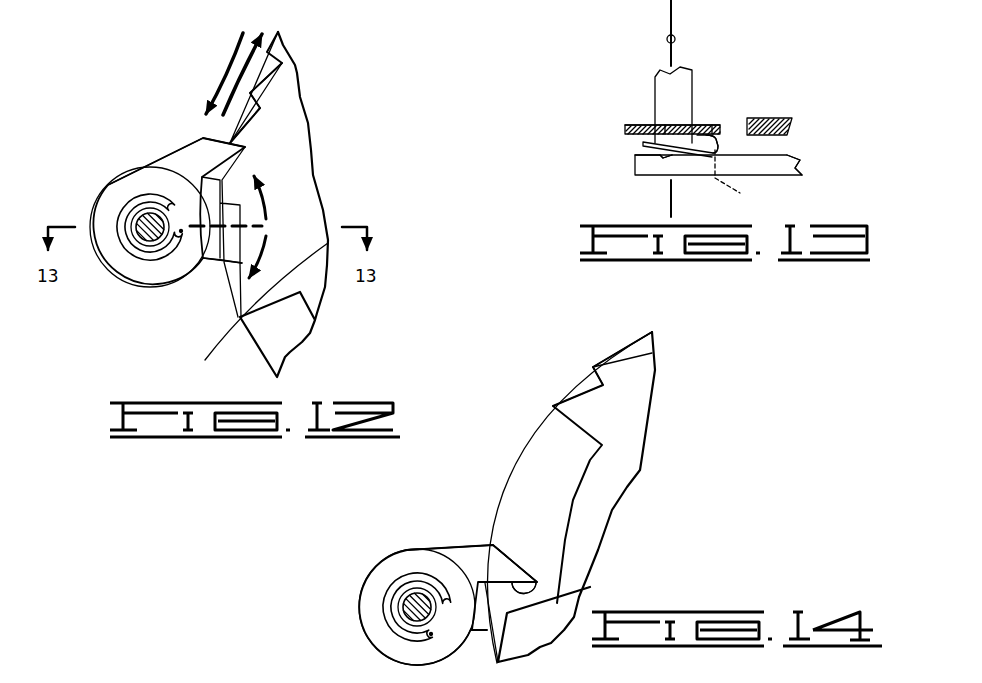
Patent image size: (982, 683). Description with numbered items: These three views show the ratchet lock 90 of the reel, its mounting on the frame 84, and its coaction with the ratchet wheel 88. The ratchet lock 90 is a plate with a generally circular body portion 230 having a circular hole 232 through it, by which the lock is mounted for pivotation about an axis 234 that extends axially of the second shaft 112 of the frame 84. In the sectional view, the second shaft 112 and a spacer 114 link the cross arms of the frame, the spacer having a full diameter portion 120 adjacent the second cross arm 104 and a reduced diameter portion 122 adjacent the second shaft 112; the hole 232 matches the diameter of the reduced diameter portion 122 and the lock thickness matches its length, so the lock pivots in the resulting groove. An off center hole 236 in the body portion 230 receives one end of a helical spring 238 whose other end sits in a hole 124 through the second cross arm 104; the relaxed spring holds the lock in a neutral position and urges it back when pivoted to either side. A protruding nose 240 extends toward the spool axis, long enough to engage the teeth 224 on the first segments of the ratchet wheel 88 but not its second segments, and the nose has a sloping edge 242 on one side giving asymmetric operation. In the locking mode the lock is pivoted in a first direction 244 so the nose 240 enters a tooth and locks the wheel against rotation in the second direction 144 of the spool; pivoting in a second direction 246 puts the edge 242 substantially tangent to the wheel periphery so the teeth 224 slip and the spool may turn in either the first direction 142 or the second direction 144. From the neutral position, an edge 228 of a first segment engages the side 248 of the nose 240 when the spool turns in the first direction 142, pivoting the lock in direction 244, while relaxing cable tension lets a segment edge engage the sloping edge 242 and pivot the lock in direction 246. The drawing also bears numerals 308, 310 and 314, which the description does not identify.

In FIG. 12, the frame 84 is at (206, 263).
In FIG. 13, the frame 84 is at (788, 172).
In FIG. 14, the frame 84 is at (477, 634).
In FIG. 12, the ratchet wheel 88 is at (264, 115).
In FIG. 13, the ratchet wheel 88 is at (773, 117).
In FIG. 14, the ratchet wheel 88 is at (626, 406).
In FIG. 12, the ratchet lock 90 is at (140, 173).
In FIG. 13, the ratchet lock 90 is at (627, 120).
In FIG. 14, the ratchet lock 90 is at (456, 548).
In FIG. 13, the second cross arm 104 is at (793, 155).
In FIG. 13, the second shaft 112 is at (688, 77).
In FIG. 13, the spacer 114 is at (658, 157).
In FIG. 13, the full diameter portion 120 is at (678, 156).
In FIG. 12, the reduced diameter portion 122 is at (145, 240).
In FIG. 13, the reduced diameter portion 122 is at (712, 127).
In FIG. 14, the reduced diameter portion 122 is at (405, 608).
In FIG. 13, the hole 124 is at (754, 203).
In FIG. 12, the first direction 142 is at (240, 72).
In FIG. 12, the second direction 144 is at (240, 43).
In FIG. 12, the teeth 224 is at (247, 93).
In FIG. 14, the teeth 224 is at (617, 368).
In FIG. 12, the edges 228 is at (205, 360).
In FIG. 14, the edges 228 is at (533, 428).
In FIG. 12, the body portion 230 is at (100, 215).
In FIG. 13, the body portion 230 is at (625, 128).
In FIG. 14, the body portion 230 is at (368, 588).
In FIG. 12, the circular hole 232 is at (140, 217).
In FIG. 13, the circular hole 232 is at (672, 120).
In FIG. 14, the circular hole 232 is at (413, 593).
In FIG. 13, the axis 234 is at (675, 38).
In FIG. 13, the off center hole 236 is at (718, 141).
In FIG. 12, the helical spring 238 is at (123, 240).
In FIG. 13, the helical spring 238 is at (643, 143).
In FIG. 14, the helical spring 238 is at (398, 628).
In FIG. 12, the nose 240 is at (202, 147).
In FIG. 14, the nose 240 is at (490, 547).
In FIG. 12, the sloping edge 242 is at (242, 140).
In FIG. 14, the sloping edge 242 is at (519, 560).
In FIG. 12, the first direction 244 is at (267, 200).
In FIG. 12, the second direction 246 is at (268, 250).
In FIG. 14, the side 248 is at (538, 600).
In FIG. 14, the member 308 is at (680, 680).
In FIG. 14, the member 310 is at (624, 679).
In FIG. 14, the member 314 is at (552, 681).